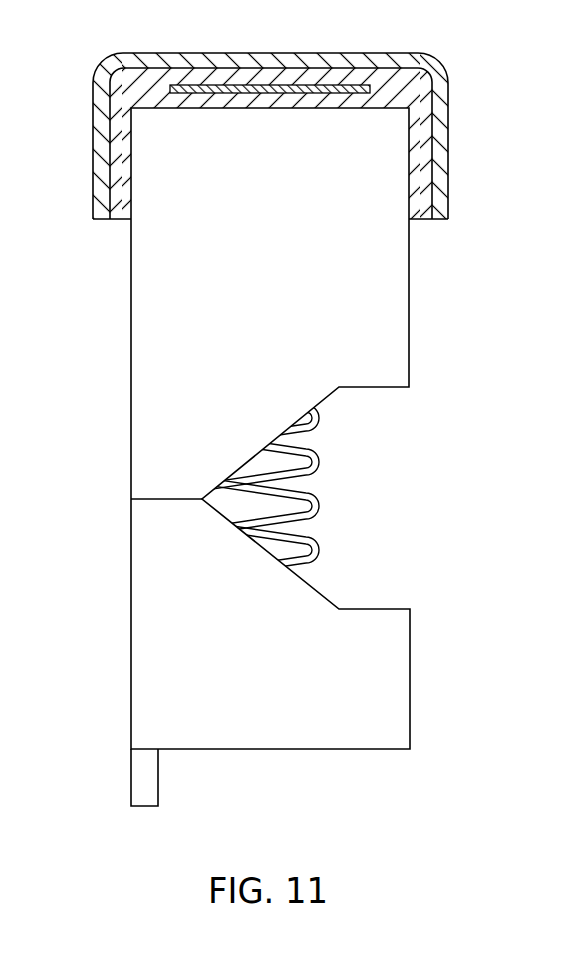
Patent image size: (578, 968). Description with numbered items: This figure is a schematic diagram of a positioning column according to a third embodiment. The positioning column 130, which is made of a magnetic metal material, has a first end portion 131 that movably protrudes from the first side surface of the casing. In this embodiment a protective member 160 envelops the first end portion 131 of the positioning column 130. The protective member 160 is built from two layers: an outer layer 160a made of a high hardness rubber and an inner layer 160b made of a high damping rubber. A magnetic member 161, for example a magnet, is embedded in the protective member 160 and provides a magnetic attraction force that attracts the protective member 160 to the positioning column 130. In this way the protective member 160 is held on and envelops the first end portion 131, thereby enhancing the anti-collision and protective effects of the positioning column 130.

The positioning column 130 is at (143, 268).
The first end portion 131 is at (155, 163).
The protective member 160 is at (308, 117).
The outer layer 160a is at (442, 117).
The inner layer 160b is at (423, 163).
The magnetic member 161 is at (268, 84).